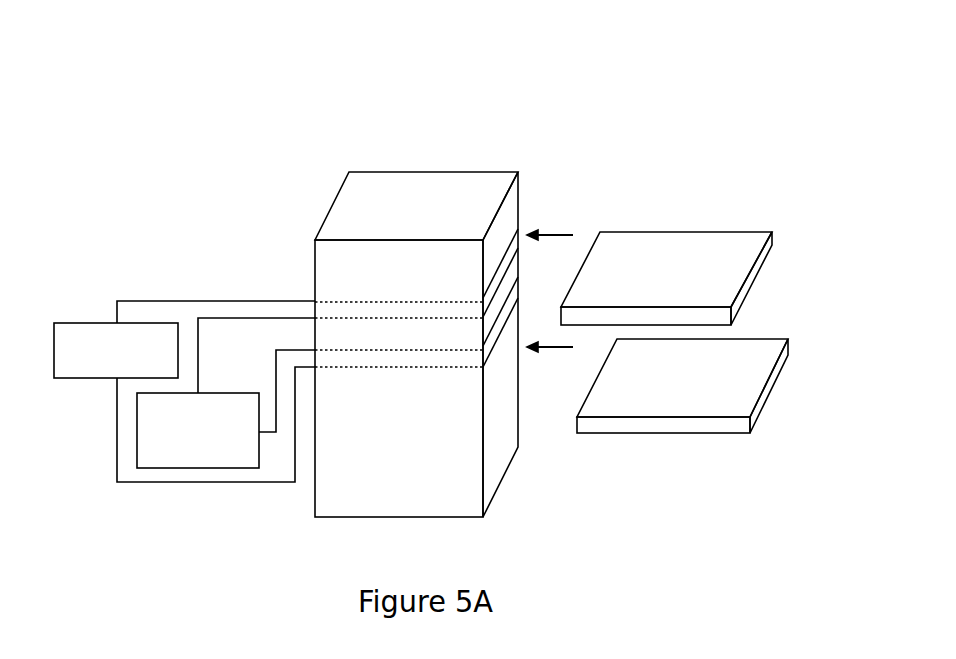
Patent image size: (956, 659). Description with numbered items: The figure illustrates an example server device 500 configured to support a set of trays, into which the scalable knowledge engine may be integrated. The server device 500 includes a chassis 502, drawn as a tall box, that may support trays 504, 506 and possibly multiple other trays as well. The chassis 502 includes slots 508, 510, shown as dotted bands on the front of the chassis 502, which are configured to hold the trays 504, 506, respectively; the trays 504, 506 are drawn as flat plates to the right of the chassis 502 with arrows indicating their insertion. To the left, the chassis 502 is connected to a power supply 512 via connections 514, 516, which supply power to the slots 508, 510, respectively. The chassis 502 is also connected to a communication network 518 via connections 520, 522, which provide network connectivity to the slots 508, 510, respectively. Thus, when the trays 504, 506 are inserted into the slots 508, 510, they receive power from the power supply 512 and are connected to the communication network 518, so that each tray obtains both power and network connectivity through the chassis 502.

The server device 500 is at (137, 112).
The chassis 502 is at (402, 171).
The tray 504 is at (735, 230).
The tray 506 is at (753, 339).
The slot 508 is at (399, 312).
The slot 510 is at (399, 360).
The power supply 512 is at (116, 350).
The connection 514 is at (173, 300).
The connection 516 is at (180, 483).
The communication network 518 is at (198, 430).
The connection 520 is at (199, 369).
The connection 522 is at (301, 348).